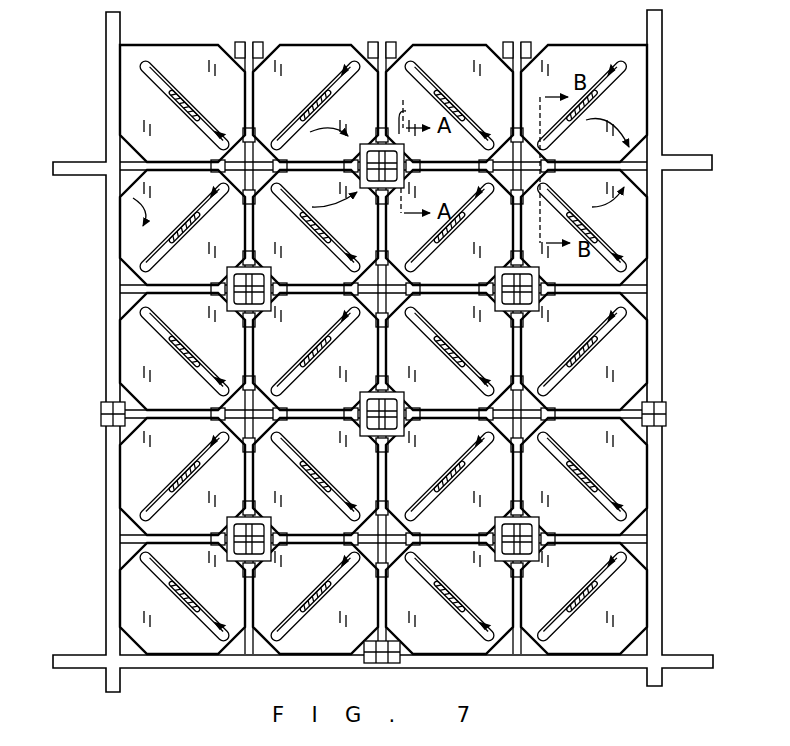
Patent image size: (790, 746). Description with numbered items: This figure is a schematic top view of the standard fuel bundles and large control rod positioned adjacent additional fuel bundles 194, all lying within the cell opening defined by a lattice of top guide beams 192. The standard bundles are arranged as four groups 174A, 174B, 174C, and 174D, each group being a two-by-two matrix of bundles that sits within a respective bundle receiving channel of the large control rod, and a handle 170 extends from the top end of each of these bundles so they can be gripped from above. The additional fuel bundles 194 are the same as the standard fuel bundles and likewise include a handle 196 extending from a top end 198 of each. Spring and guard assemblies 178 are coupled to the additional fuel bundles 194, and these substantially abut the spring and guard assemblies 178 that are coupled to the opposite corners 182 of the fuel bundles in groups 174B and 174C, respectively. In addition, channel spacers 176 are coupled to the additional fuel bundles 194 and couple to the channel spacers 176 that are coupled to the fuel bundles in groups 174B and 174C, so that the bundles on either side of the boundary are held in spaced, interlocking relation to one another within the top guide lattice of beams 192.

The handle 170 is at (468, 238).
The group of fuel bundles 174A is at (196, 567).
The group of fuel bundles 174B is at (205, 272).
The group of fuel bundles 174C is at (618, 356).
The group of fuel bundles 174D is at (612, 465).
The channel spacer 176 is at (389, 44).
The spring and guard assembly 178 is at (165, 215).
The opposite corners 182 is at (158, 128).
The top guide beam 192 is at (690, 161).
The additional fuel bundle 194 is at (177, 67).
The handle 196 is at (198, 92).
The top end 198 is at (160, 117).